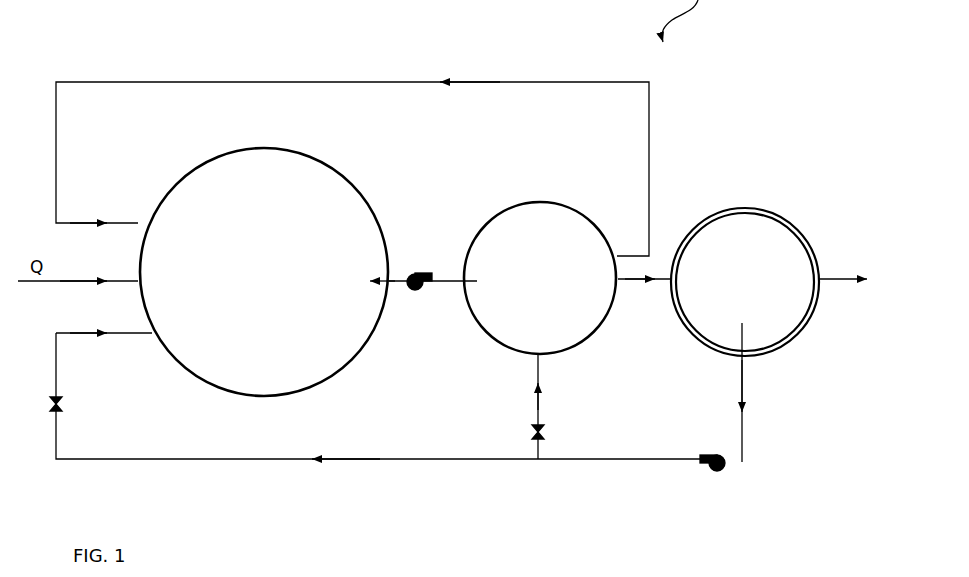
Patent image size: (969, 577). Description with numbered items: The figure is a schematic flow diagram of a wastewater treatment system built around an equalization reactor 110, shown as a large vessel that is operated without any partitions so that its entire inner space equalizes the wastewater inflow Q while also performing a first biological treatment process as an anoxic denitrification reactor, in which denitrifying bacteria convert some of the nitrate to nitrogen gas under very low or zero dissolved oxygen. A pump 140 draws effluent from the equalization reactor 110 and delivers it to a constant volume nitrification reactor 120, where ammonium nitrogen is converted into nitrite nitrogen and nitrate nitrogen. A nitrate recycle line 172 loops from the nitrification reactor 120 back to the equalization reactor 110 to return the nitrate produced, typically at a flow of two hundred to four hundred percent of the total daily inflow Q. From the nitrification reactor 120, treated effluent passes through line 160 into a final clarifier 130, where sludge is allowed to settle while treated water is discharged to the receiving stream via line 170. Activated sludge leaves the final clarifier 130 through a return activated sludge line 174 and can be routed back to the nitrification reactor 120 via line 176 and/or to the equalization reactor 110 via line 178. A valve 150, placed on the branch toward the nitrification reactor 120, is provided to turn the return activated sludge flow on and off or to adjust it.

The equalization reactor 110 is at (357, 186).
The nitrification reactor 120 is at (540, 278).
The final clarifier 130 is at (745, 282).
The pump 140 is at (418, 290).
The valve 150 is at (546, 428).
The line 160 is at (644, 293).
The line 170 is at (847, 260).
The nitrate recycle line 172 is at (352, 169).
The return activated sludge line 174 is at (764, 392).
The line 176 is at (517, 406).
The line 178 is at (387, 410).